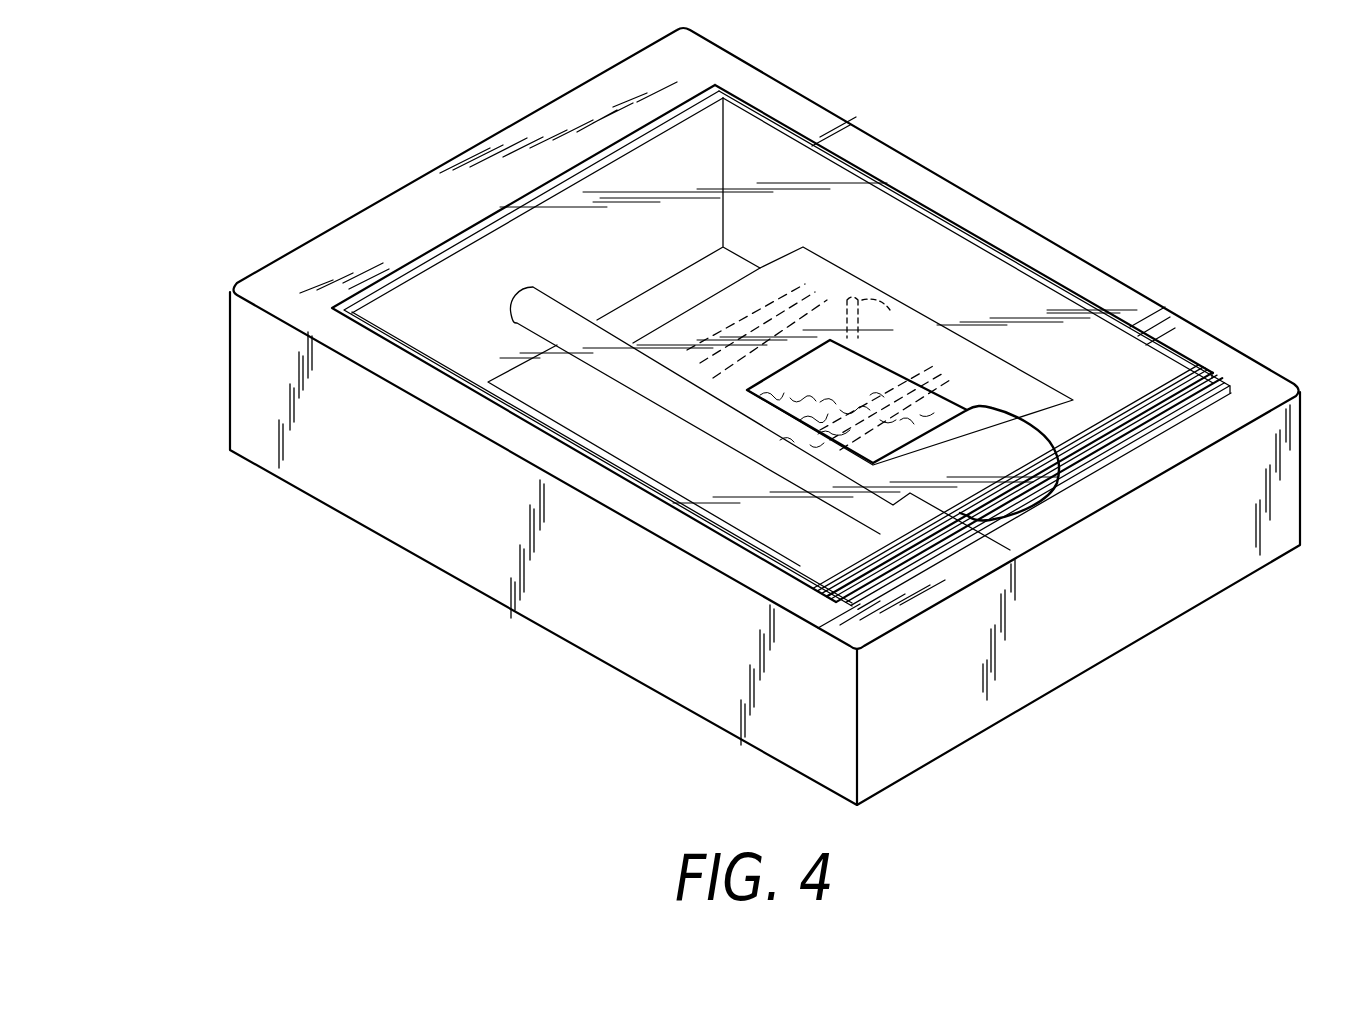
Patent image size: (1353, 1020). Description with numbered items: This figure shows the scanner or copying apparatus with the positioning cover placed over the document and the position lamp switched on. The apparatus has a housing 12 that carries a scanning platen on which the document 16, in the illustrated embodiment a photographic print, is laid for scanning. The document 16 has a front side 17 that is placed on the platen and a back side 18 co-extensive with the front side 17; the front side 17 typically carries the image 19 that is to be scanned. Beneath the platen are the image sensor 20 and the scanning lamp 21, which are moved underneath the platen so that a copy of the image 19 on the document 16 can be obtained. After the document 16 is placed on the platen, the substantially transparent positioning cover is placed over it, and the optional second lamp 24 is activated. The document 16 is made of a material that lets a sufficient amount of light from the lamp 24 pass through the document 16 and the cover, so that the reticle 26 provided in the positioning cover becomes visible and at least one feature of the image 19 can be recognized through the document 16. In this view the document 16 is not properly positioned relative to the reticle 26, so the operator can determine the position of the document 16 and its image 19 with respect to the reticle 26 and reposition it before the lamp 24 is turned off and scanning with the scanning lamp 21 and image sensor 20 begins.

The housing 12 is at (227, 320).
The document 16 is at (1010, 360).
The front side 17 is at (837, 283).
The back side 18 is at (806, 262).
The image 19 is at (877, 310).
The image sensor 20 is at (1183, 367).
The scanning lamp 21 is at (1203, 380).
The second lamp 24 is at (760, 463).
The reticle 26 is at (1000, 410).